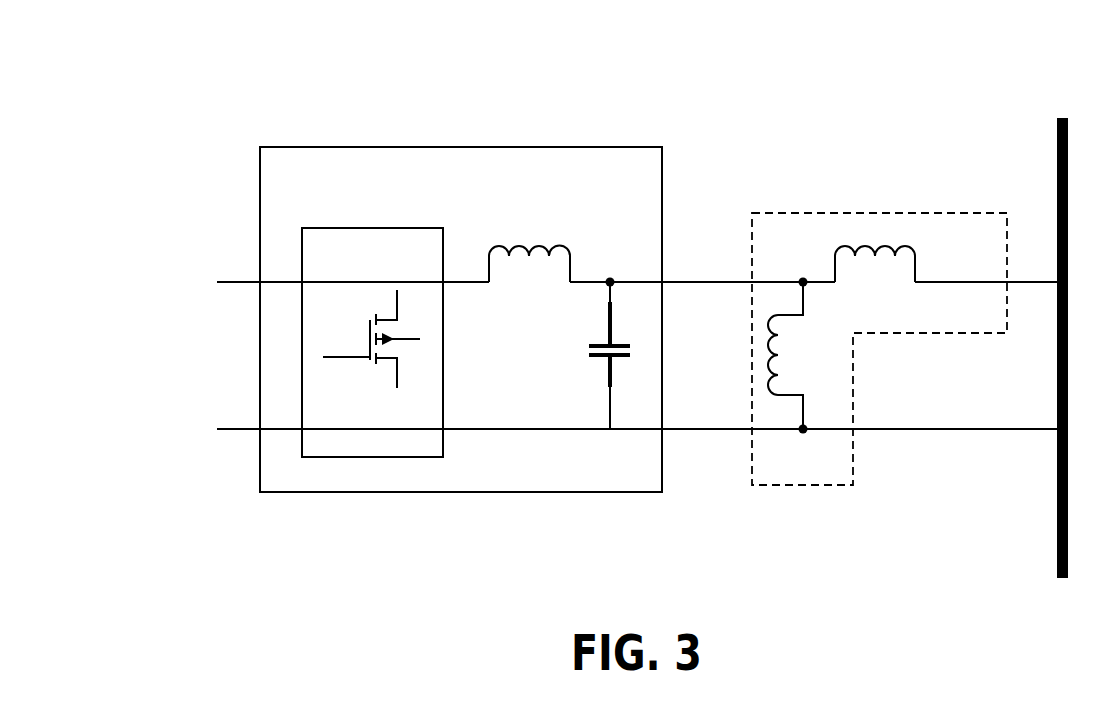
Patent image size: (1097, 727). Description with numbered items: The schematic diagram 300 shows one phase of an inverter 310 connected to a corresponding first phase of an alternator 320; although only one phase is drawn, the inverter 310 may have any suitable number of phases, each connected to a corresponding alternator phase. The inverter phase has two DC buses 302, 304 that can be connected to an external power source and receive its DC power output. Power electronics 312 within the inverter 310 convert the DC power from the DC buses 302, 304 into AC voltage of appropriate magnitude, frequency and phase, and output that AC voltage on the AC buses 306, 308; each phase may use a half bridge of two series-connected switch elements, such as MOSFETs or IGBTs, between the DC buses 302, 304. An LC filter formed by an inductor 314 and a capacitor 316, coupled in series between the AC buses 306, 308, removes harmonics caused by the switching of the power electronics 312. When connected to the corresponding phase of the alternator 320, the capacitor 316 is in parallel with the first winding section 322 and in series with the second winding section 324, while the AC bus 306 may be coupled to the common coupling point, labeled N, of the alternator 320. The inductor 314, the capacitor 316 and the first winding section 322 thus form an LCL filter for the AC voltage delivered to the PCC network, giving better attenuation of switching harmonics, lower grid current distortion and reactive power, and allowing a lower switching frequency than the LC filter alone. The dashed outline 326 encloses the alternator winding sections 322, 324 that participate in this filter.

The schematic diagram 300 is at (238, 85).
The DC bus 302 is at (232, 285).
The DC bus 304 is at (232, 426).
The AC bus 306 is at (458, 278).
The AC bus 308 is at (463, 427).
The inverter 310 is at (540, 185).
The power electronics 312 is at (335, 243).
The inductor 314 is at (572, 256).
The capacitor 316 is at (632, 358).
The alternator 320 is at (935, 106).
The first winding section 322 is at (772, 345).
The second winding section 324 is at (877, 265).
The filter network 326 is at (777, 212).